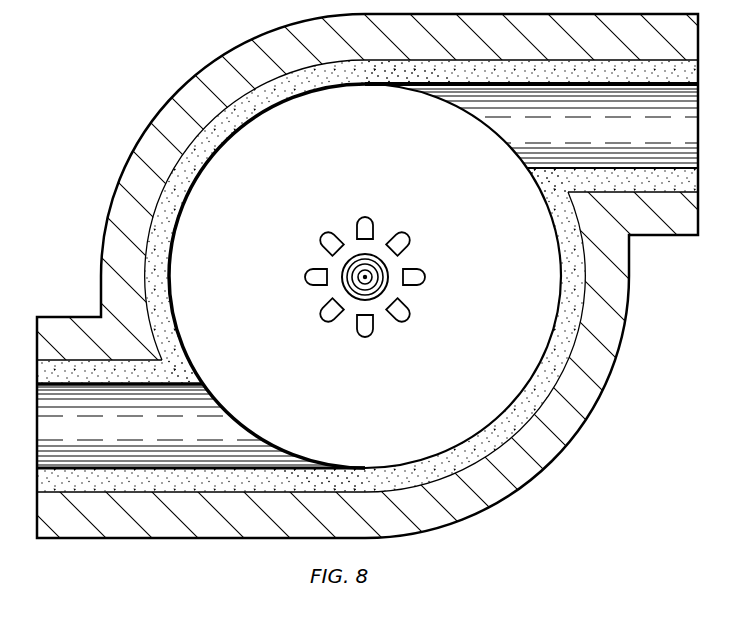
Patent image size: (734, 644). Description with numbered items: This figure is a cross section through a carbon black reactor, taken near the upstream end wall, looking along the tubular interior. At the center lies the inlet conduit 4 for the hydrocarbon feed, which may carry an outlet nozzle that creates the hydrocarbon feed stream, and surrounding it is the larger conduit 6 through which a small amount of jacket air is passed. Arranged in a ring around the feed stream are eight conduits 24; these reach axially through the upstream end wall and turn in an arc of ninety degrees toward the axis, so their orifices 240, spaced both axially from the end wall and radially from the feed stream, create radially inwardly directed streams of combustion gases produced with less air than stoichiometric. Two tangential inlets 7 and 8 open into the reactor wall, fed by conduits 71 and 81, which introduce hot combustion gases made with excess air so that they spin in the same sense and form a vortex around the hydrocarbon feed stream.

The inlet conduit 4 is at (369, 277).
The larger conduit 6 is at (343, 268).
The tangential inlet 7 is at (233, 418).
The tangential inlet 8 is at (506, 143).
The conduit 24 is at (371, 222).
The orifice 240 is at (372, 315).
The conduit 71 is at (146, 433).
The conduit 81 is at (614, 134).